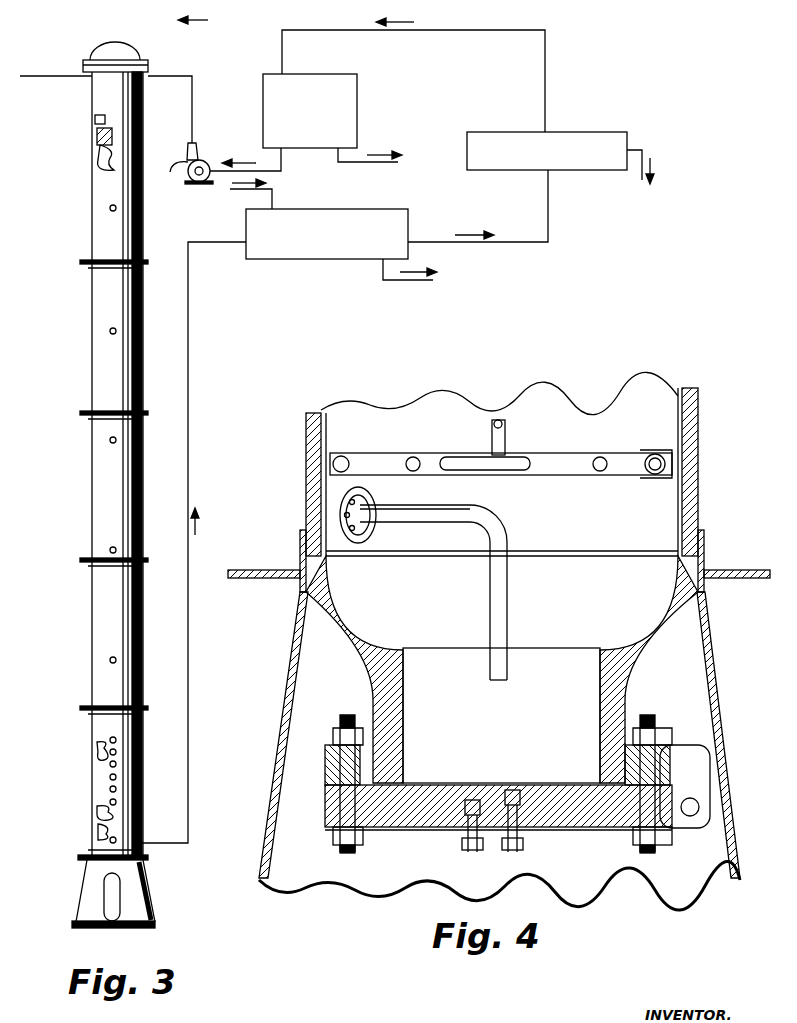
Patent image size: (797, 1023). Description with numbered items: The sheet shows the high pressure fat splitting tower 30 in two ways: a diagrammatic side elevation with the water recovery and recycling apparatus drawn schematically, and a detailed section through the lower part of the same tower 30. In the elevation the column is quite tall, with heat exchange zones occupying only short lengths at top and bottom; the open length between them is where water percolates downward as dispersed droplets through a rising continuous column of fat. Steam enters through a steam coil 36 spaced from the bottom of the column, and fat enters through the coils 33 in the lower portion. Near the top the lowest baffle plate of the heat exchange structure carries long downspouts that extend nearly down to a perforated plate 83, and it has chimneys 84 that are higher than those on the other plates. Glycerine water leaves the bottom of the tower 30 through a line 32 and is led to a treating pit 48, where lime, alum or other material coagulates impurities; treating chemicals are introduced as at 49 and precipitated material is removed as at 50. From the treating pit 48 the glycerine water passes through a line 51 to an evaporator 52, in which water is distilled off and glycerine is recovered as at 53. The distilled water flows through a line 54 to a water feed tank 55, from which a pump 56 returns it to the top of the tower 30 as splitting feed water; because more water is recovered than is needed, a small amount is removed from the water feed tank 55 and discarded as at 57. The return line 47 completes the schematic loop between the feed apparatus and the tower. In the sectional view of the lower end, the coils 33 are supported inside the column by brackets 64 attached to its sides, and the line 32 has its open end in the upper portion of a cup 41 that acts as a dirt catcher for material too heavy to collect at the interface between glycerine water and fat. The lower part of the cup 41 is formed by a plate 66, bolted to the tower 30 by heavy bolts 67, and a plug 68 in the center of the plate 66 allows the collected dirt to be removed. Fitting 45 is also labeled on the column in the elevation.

In FIG. 3, the tower 30 is at (92, 338).
In FIG. 4, the tower 30 is at (702, 480).
In FIG. 3, the line 32 is at (98, 832).
In FIG. 4, the line 32 is at (512, 632).
In FIG. 3, the coils 33 is at (97, 812).
In FIG. 4, the coils 33 is at (400, 456).
In FIG. 3, the steam coil 36 is at (97, 752).
In FIG. 4, the cup 41 is at (478, 718).
In FIG. 3, the fitting 45 is at (95, 119).
In FIG. 3, the return line 47 is at (188, 322).
In FIG. 3, the treating pit 48 is at (338, 259).
In FIG. 3, the treating chemical inlet 49 is at (272, 195).
In FIG. 3, the precipitated material outlet 50 is at (392, 280).
In FIG. 3, the line 51 is at (526, 244).
In FIG. 3, the evaporator 52 is at (608, 170).
In FIG. 3, the glycerine recovery outlet 53 is at (642, 150).
In FIG. 3, the line 54 is at (545, 98).
In FIG. 3, the water feed tank 55 is at (357, 128).
In FIG. 3, the pump 56 is at (185, 178).
In FIG. 3, the water discard outlet 57 is at (360, 163).
In FIG. 4, the brackets 64 is at (670, 450).
In FIG. 4, the plate 66 is at (424, 826).
In FIG. 4, the bolts 67 is at (332, 852).
In FIG. 4, the plug 68 is at (535, 846).
In FIG. 3, the perforated plate 83 is at (100, 155).
In FIG. 3, the chimneys 84 is at (97, 137).